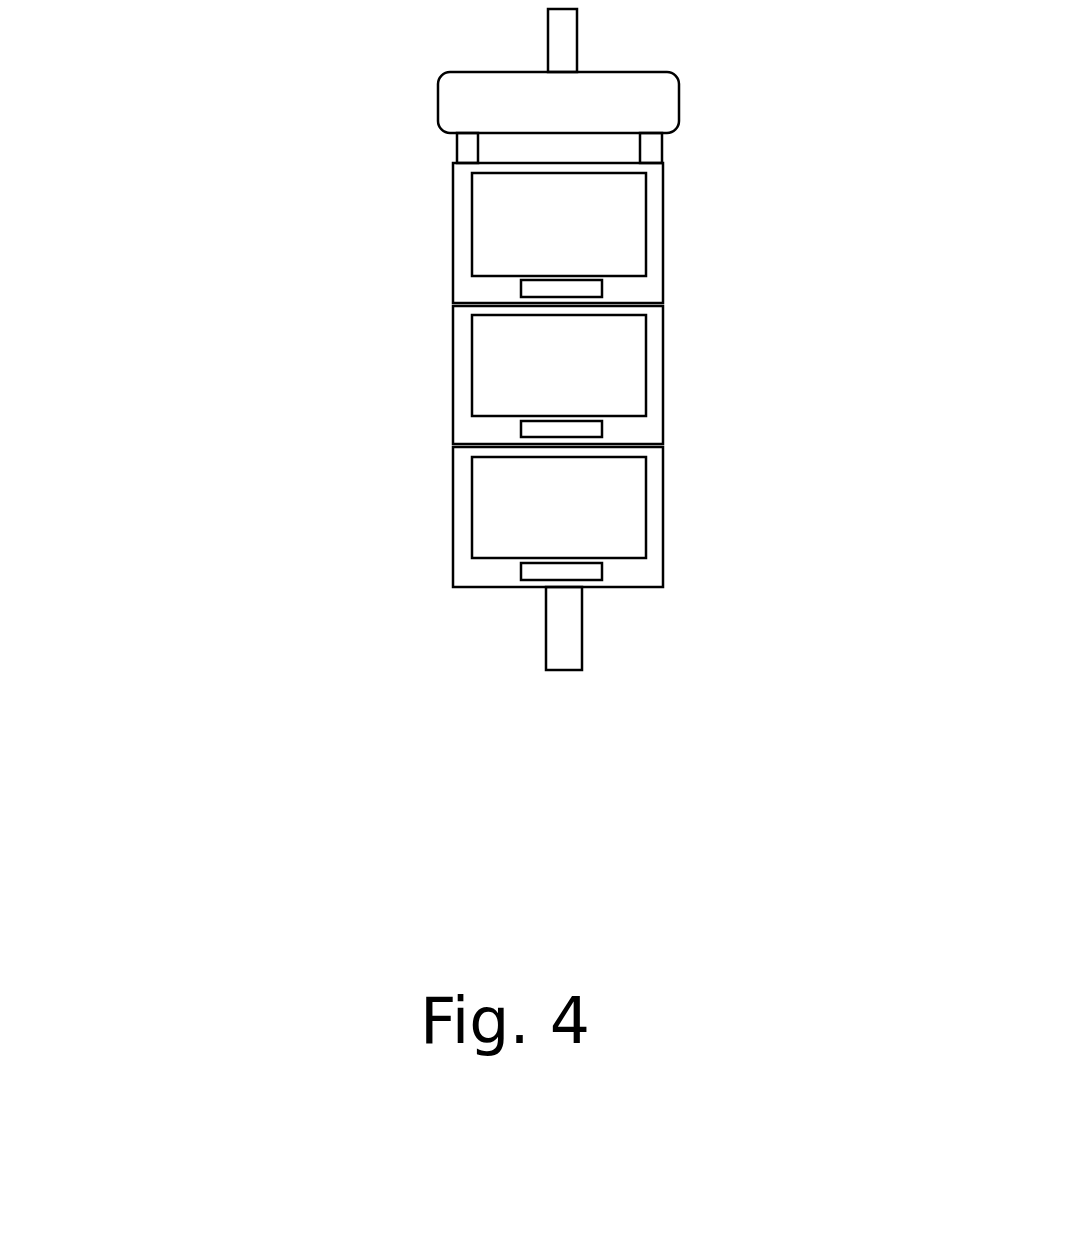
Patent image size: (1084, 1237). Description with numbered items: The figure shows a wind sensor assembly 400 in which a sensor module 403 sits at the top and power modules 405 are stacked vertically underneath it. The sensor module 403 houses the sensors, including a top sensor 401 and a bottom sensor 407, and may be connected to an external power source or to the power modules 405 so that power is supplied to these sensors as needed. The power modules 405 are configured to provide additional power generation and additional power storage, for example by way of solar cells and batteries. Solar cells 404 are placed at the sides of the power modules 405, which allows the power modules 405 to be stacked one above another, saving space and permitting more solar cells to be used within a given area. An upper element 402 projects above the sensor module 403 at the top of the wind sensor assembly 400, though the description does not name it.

The wind sensor assembly 400 is at (178, 36).
The top sensor 401 is at (478, 113).
The connector shaft 402 is at (678, 40).
The sensor module 403 is at (647, 235).
The solar cells 404 is at (640, 447).
The power modules 405 is at (451, 446).
The bottom sensor 407 is at (649, 160).